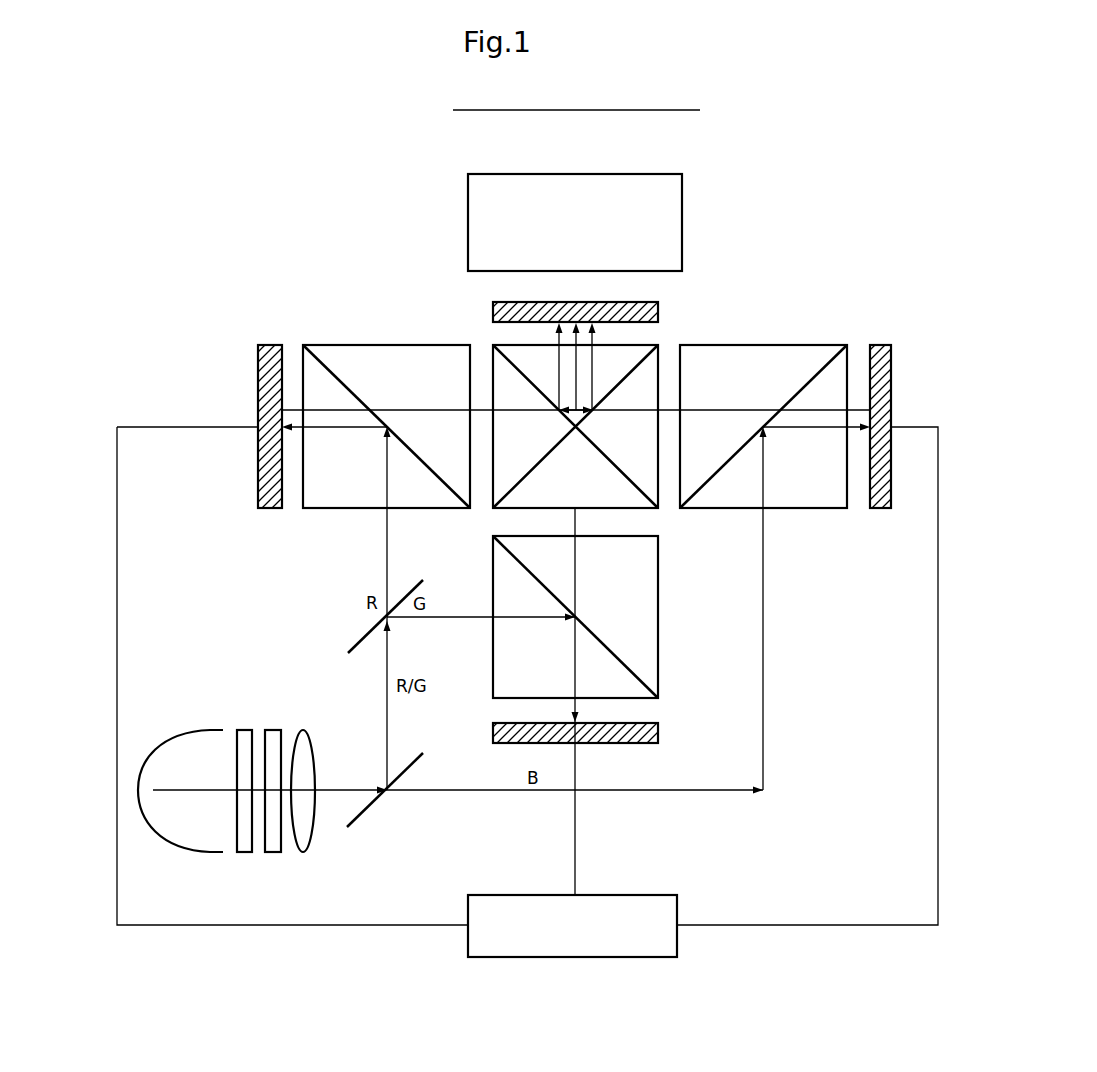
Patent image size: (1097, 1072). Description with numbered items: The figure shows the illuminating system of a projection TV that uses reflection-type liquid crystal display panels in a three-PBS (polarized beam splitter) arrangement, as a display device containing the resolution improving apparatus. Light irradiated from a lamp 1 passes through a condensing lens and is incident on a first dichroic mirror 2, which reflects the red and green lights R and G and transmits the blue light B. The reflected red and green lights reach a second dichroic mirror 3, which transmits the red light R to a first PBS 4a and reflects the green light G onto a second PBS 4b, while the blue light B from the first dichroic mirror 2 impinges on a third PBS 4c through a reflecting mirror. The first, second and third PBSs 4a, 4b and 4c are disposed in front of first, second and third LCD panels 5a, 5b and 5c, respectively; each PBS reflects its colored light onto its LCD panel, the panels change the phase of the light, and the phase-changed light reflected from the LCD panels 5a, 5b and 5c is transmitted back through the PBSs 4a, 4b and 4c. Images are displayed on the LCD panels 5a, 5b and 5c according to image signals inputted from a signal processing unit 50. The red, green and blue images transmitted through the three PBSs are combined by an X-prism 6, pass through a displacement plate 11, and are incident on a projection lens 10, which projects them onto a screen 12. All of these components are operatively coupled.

The lamp 1 is at (200, 730).
The first dichroic mirror 2 is at (368, 812).
The second dichroic mirror 3 is at (368, 630).
The first PBS 4a is at (387, 352).
The second PBS 4b is at (658, 615).
The third PBS 4c is at (805, 503).
The first LCD panel 5a is at (271, 345).
The second LCD panel 5b is at (658, 733).
The third LCD panel 5c is at (878, 510).
The X-prism 6 is at (527, 355).
The projection lens 10 is at (682, 222).
The displacement plate 11 is at (658, 312).
The screen 12 is at (647, 110).
The signal processing unit 50 is at (575, 957).